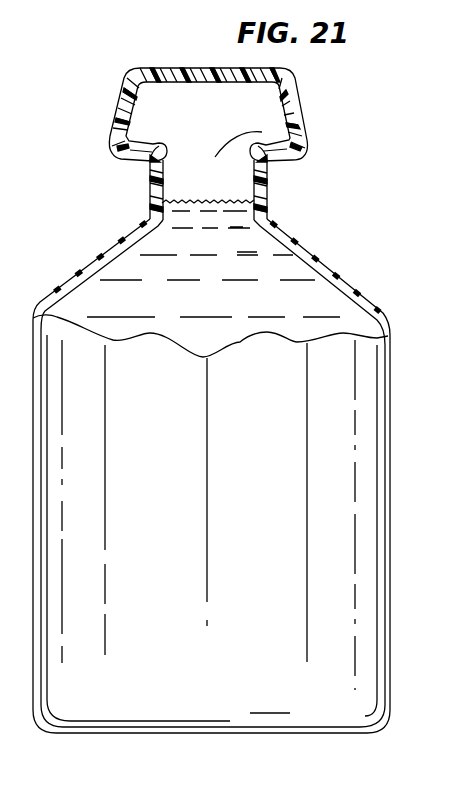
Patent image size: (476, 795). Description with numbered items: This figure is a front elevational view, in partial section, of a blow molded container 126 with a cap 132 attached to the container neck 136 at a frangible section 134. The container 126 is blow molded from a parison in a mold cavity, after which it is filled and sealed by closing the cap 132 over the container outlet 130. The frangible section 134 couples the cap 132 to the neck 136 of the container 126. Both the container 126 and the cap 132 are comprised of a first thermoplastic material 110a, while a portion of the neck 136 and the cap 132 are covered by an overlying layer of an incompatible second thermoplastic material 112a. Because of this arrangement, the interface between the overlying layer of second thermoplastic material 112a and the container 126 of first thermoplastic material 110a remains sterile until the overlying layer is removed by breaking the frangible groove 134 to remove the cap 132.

The second thermoplastic material 112a is at (121, 93).
The cap 132 is at (208, 85).
The container outlet 130 is at (262, 132).
The frangible section 134 is at (155, 159).
The neck 136 is at (143, 168).
The first thermoplastic material 110a is at (340, 268).
The container 126 is at (365, 621).